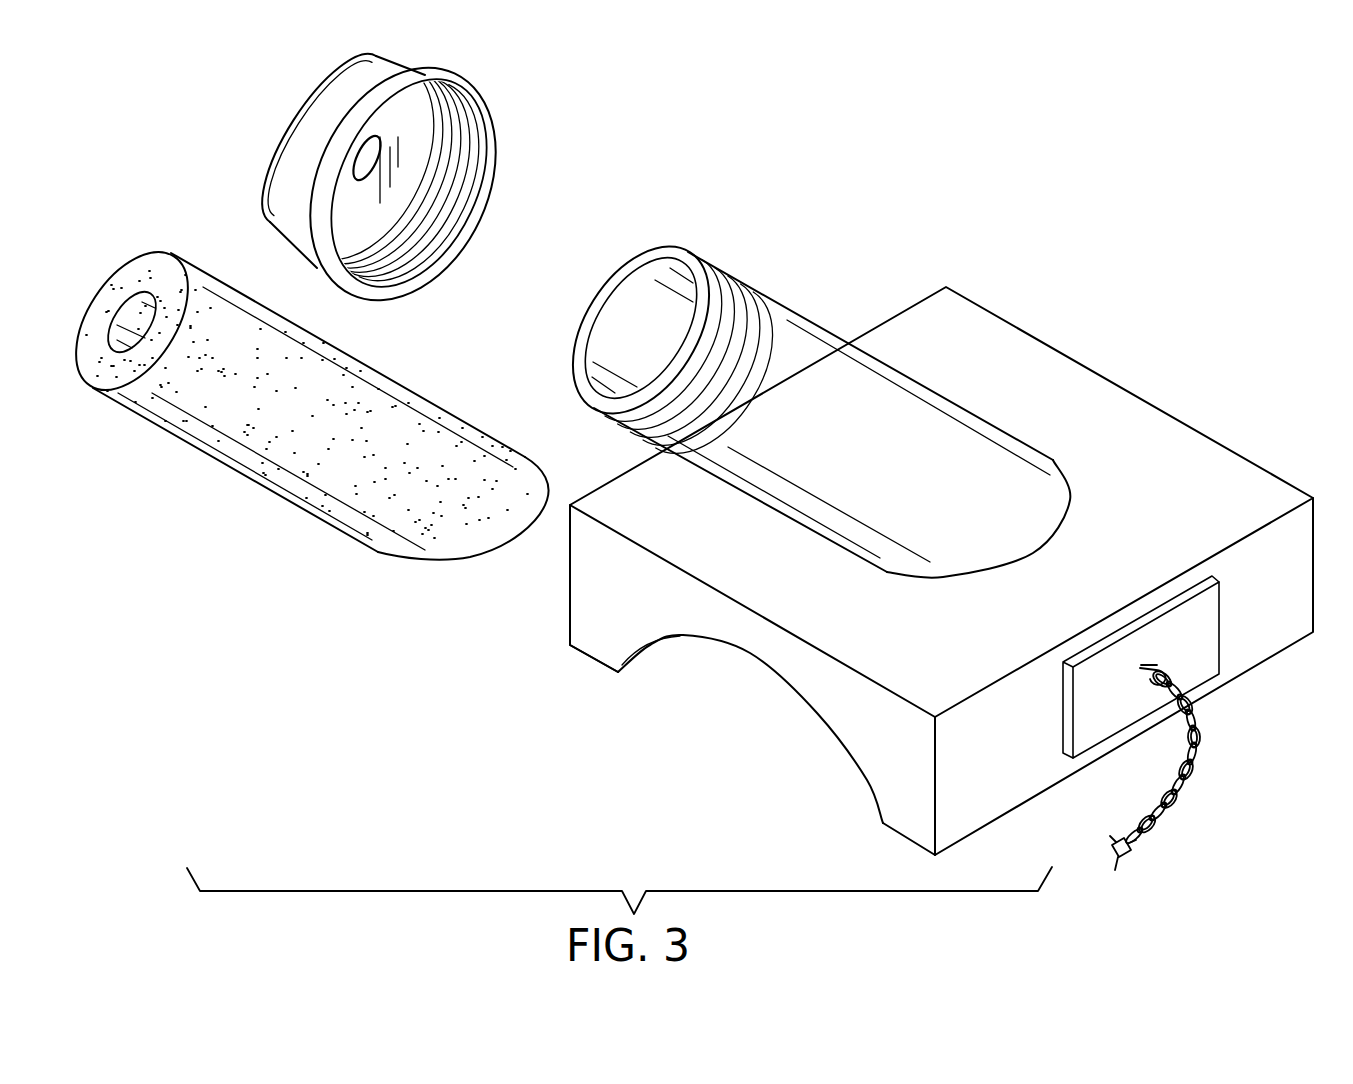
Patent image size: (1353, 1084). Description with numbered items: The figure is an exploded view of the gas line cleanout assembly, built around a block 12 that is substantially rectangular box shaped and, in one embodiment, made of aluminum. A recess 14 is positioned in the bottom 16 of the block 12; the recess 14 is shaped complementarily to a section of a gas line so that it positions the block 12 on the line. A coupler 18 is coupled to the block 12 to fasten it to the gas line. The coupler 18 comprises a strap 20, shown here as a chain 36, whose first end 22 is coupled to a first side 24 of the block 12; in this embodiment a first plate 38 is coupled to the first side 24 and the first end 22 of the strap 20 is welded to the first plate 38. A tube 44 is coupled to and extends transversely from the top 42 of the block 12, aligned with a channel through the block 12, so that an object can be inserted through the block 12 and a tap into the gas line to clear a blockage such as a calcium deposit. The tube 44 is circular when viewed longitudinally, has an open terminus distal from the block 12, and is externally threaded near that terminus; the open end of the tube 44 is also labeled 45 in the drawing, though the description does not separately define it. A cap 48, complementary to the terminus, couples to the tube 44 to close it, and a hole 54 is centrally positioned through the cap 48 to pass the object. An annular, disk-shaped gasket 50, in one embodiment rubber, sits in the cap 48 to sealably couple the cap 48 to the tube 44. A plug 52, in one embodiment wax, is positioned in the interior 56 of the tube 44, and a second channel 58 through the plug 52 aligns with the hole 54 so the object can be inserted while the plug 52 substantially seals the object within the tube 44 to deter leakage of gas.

The block 12 is at (1010, 323).
The recess 14 is at (743, 703).
The bottom 16 is at (590, 653).
The coupler 18 is at (1124, 860).
The strap 20 is at (1223, 757).
The first end 22 is at (1152, 663).
The first side 24 is at (1293, 557).
The chain 36 is at (1204, 750).
The first plate 38 is at (1200, 640).
The top 42 is at (1041, 402).
The tube 44 is at (870, 363).
The opening 45 is at (652, 262).
The cap 48 is at (343, 68).
The gasket 50 is at (407, 137).
The plug 52 is at (272, 447).
The hole 54 is at (370, 167).
The interior 56 is at (795, 387).
The second channel 58 is at (136, 318).